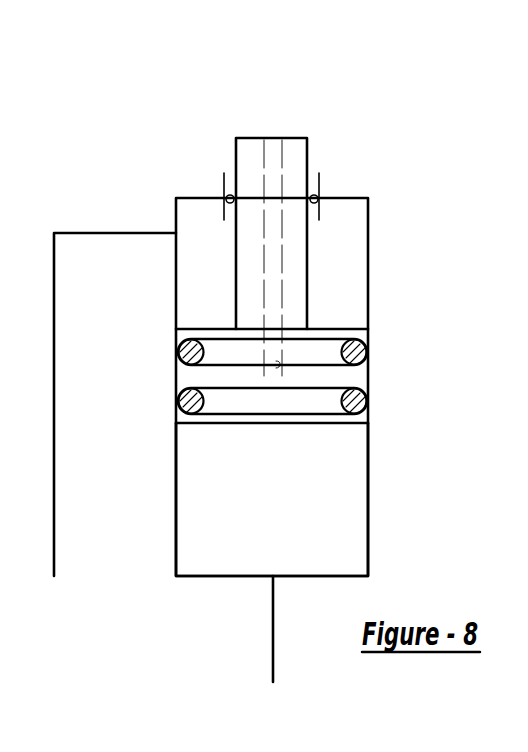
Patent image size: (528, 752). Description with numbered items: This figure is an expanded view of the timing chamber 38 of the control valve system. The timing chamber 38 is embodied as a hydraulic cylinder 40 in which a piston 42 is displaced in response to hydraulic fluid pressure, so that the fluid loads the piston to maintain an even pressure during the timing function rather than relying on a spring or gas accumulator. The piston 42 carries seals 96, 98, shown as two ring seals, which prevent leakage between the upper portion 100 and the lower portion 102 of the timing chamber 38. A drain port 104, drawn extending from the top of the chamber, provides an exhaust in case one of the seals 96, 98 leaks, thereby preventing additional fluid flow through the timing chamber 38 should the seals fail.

The timing chamber 38 is at (121, 166).
The hydraulic cylinder 40 is at (369, 503).
The piston 42 is at (378, 393).
The seal 96 is at (358, 352).
The seal 98 is at (356, 398).
The upper portion 100 is at (334, 253).
The lower portion 102 is at (277, 502).
The drain port 104 is at (261, 157).